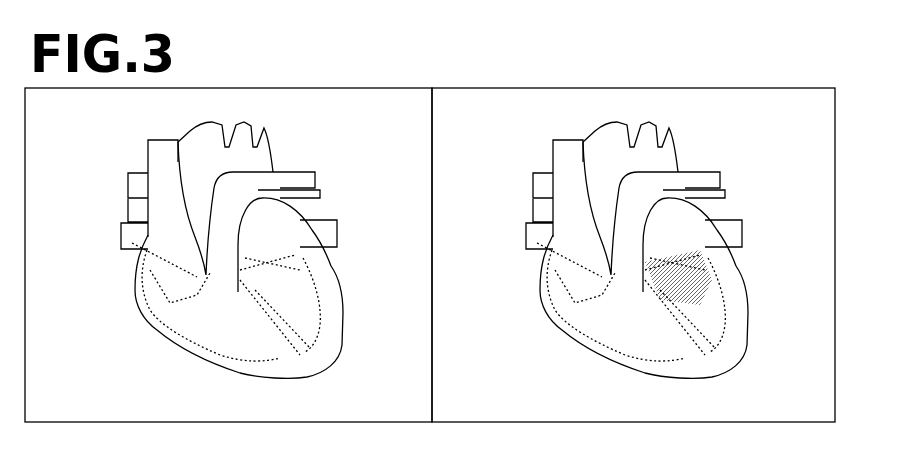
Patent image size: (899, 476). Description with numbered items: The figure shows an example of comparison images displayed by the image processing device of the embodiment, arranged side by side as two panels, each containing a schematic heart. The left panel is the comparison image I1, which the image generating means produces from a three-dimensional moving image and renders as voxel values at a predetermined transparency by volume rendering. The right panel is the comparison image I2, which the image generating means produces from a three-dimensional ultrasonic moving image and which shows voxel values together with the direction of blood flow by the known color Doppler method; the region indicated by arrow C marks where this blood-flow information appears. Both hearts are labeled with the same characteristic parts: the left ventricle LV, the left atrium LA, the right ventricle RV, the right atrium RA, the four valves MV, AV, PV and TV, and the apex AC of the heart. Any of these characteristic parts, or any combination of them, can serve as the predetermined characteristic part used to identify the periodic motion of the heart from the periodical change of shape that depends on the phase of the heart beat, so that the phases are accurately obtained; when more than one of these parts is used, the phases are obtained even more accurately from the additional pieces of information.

The valve AV is at (203, 255).
The valve PV is at (178, 260).
The right atrium RA is at (137, 273).
The valve TV is at (152, 312).
The left atrium LA is at (325, 200).
The valve MV is at (322, 258).
The left ventricle LV is at (343, 313).
The apex AC is at (318, 372).
The right ventricle RV is at (220, 358).
The arrow C is at (704, 287).
The comparison image I1 is at (396, 422).
The comparison image I2 is at (806, 422).